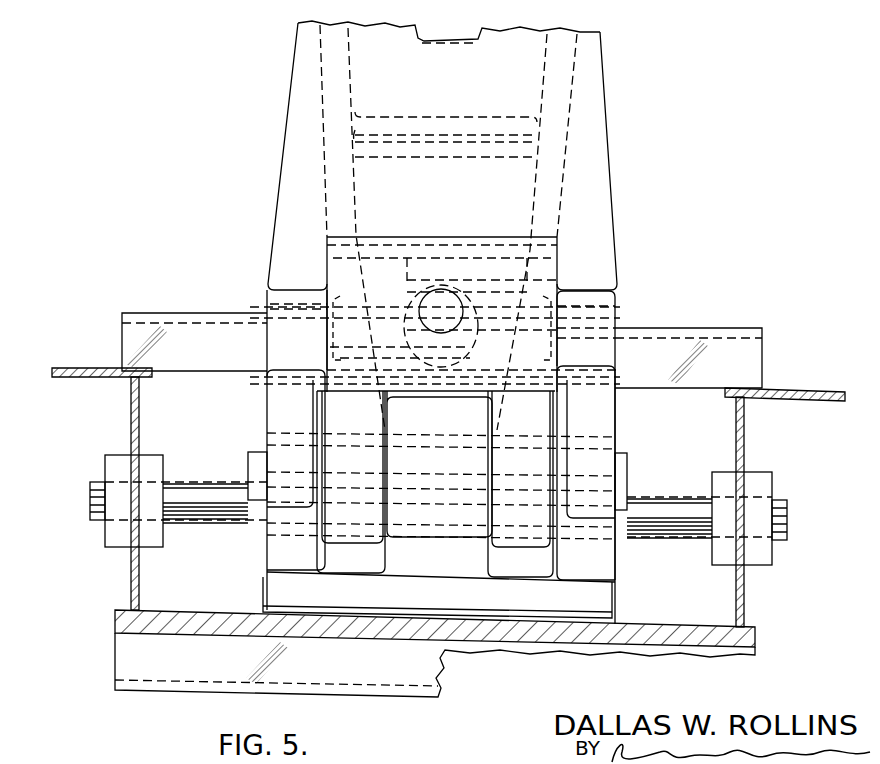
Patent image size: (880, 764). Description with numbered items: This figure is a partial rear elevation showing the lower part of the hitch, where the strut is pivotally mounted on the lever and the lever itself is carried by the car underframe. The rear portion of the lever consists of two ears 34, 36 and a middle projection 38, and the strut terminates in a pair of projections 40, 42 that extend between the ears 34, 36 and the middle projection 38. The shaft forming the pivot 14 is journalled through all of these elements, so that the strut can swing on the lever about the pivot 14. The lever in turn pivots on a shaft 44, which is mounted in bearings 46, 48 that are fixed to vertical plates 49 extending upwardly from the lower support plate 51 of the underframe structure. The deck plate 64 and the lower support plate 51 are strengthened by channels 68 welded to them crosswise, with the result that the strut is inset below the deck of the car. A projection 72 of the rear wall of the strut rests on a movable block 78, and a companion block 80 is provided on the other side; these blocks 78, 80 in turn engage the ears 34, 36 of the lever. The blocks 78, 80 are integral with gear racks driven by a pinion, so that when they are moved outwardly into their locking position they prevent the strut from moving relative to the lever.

The projection of rear wall 72 is at (597, 126).
The movable block 78 is at (605, 308).
The movable block 80 is at (288, 345).
The channel 68 is at (178, 313).
The deck plate 64 is at (80, 366).
The vertical plate 49 is at (140, 418).
The ear 34 is at (273, 412).
The ear 36 is at (608, 420).
The projection of strut 40 is at (362, 425).
The middle projection 38 is at (452, 423).
The projection of strut 42 is at (534, 425).
The pivot 14 is at (250, 453).
The shaft 44 is at (95, 482).
The bearing 48 is at (155, 545).
The bearing 46 is at (720, 563).
The lower support plate 51 is at (755, 630).